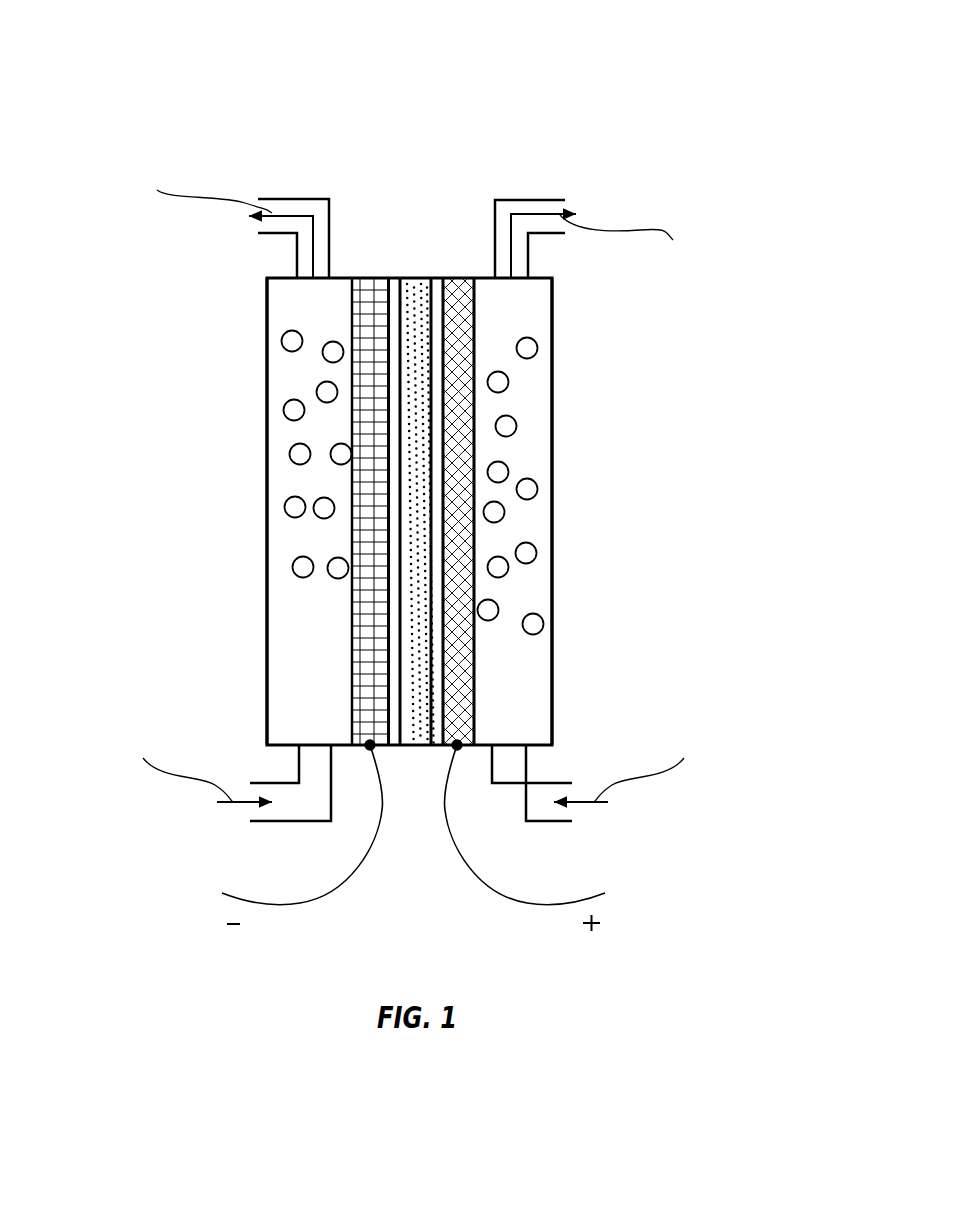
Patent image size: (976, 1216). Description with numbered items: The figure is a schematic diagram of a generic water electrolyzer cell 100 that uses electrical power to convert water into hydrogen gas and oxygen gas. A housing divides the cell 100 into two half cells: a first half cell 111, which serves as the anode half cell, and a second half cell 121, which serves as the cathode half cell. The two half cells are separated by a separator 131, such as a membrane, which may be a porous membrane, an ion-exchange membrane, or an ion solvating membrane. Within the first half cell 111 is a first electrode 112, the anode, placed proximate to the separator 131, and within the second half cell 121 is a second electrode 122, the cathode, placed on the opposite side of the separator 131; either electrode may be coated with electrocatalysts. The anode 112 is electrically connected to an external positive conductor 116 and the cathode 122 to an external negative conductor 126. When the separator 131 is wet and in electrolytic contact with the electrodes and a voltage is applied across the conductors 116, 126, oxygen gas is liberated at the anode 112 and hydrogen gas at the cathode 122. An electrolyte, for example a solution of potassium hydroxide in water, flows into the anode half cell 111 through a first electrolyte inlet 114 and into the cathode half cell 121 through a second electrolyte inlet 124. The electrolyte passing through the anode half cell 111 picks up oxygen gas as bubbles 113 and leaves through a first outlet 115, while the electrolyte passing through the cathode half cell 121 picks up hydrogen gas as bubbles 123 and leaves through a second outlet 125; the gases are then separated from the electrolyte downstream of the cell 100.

The electrolyzer cell 100 is at (106, 83).
The first half cell 111 is at (568, 641).
The first electrode 112 is at (457, 340).
The bubbles 113 is at (526, 467).
The first electrolyte inlet 114 is at (557, 782).
The first outlet 115 is at (515, 199).
The external positive conductor 116 is at (510, 900).
The second half cell 121 is at (257, 637).
The second electrode 122 is at (358, 325).
The bubbles 123 is at (286, 440).
The second electrolyte inlet 124 is at (263, 782).
The second outlet 125 is at (294, 198).
The external negative conductor 126 is at (337, 893).
The separator 131 is at (418, 663).